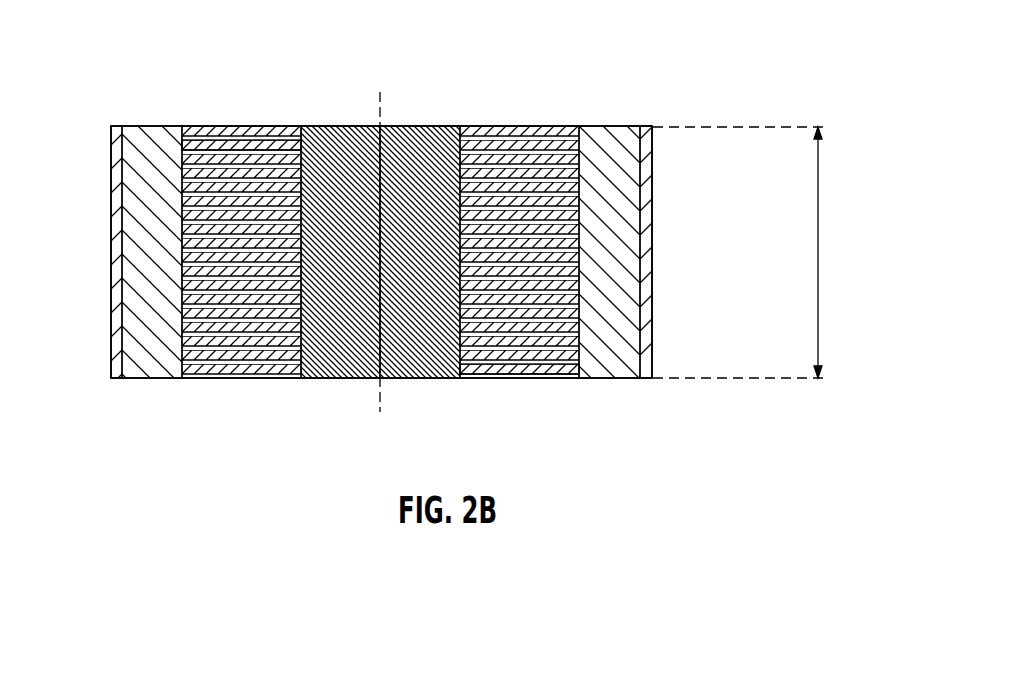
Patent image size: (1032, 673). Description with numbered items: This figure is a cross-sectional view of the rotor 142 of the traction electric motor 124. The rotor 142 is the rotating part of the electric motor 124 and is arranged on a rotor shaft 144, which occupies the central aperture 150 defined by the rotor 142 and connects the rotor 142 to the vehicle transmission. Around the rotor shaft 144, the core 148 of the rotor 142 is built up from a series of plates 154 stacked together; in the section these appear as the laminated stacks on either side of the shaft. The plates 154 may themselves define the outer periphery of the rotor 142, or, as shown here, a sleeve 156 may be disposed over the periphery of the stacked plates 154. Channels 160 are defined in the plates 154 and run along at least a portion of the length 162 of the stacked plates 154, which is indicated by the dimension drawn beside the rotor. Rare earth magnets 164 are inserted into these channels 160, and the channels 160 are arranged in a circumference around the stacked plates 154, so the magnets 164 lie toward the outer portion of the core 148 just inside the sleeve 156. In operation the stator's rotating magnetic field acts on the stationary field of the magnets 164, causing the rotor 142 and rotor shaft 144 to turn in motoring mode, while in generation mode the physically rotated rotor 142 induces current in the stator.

The electric motor 124 is at (587, 46).
The rotor 142 is at (414, 194).
The rotor shaft 144 is at (353, 133).
The core 148 is at (512, 380).
The central aperture 150 is at (457, 153).
The plates 154 is at (253, 141).
The sleeve 156 is at (652, 252).
The channels 160 is at (530, 163).
The length 162 is at (819, 267).
The rare earth magnets 164 is at (127, 272).